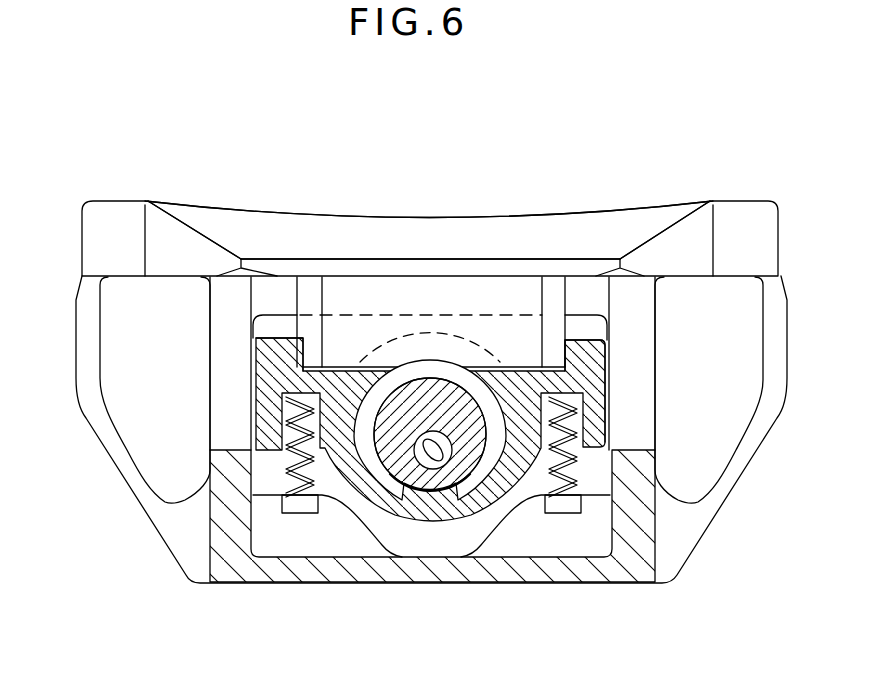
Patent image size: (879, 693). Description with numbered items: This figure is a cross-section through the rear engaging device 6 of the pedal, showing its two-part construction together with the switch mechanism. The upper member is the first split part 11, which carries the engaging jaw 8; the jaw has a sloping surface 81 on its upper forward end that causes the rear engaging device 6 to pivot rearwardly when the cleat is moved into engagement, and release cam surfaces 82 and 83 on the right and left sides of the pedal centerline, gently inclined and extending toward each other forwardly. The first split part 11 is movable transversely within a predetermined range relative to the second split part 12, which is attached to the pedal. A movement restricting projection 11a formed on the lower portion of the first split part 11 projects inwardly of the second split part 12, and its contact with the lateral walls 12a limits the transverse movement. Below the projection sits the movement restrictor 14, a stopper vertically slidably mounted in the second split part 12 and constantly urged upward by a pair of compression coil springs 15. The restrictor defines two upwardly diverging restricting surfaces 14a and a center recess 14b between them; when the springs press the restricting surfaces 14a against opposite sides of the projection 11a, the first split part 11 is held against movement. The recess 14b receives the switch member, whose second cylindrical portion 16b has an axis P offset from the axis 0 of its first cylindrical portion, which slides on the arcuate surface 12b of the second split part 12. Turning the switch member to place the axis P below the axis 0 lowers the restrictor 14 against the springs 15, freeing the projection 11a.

The rear engaging device 6 is at (72, 173).
The engaging jaw 8 is at (308, 214).
The first split part 11 is at (95, 200).
The movement restricting projection 11a is at (297, 302).
The second split part 12 is at (76, 352).
The lateral walls 12a is at (210, 378).
The arcuate surface 12b is at (466, 529).
The movement restrictor 14 is at (375, 558).
The restricting surfaces 14a is at (300, 343).
The center recess 14b is at (413, 343).
The compression coil springs 15 is at (282, 478).
The second cylindrical portion 16b is at (567, 583).
The sloping surface 81 is at (604, 239).
The release cam surface 82 is at (684, 244).
The release cam surface 83 is at (170, 243).
The axis of the second cylindrical portion P is at (447, 410).
The axis of the first cylindrical portion 0 is at (434, 450).